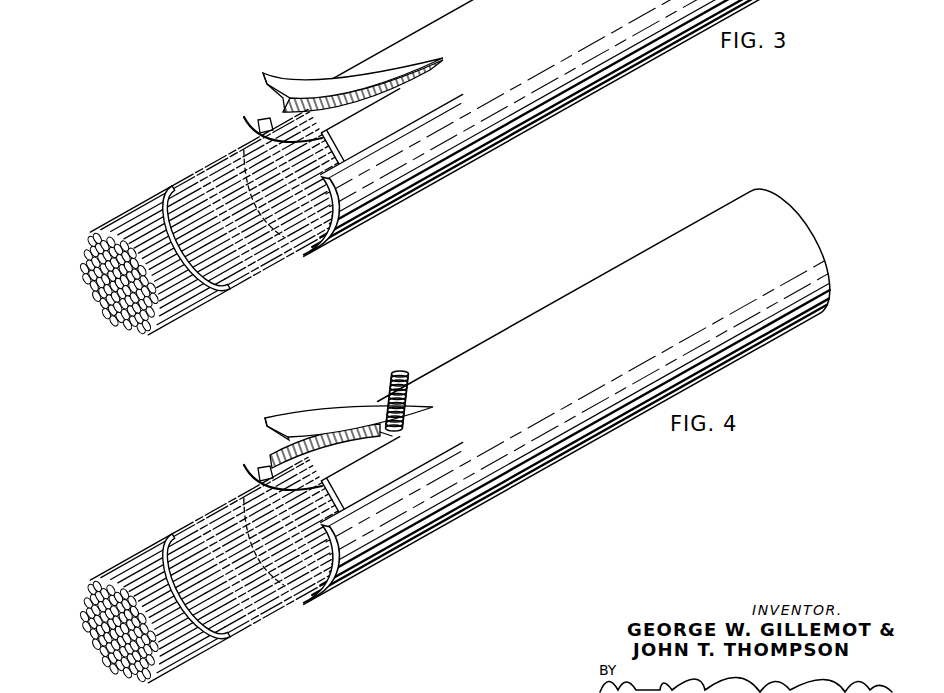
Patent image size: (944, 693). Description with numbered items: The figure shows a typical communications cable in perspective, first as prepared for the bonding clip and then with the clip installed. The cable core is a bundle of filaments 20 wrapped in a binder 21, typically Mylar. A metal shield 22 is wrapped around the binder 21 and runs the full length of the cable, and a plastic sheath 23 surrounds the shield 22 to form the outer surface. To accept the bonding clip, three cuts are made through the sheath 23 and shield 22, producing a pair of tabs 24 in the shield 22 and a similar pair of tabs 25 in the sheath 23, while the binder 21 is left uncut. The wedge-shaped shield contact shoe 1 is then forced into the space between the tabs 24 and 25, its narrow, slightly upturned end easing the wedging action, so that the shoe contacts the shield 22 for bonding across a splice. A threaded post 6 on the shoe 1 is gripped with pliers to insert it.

In FIG. 4, the shield contact shoe 1 is at (378, 438).
In FIG. 4, the threaded post 6 is at (400, 374).
In FIG. 3, the filaments 20 is at (82, 268).
In FIG. 4, the filaments 20 is at (73, 644).
In FIG. 3, the binder 21 is at (217, 163).
In FIG. 4, the binder 21 is at (256, 554).
In FIG. 3, the metal shield 22 is at (290, 110).
In FIG. 3, the plastic sheath 23 is at (413, 170).
In FIG. 4, the plastic sheath 23 is at (541, 389).
In FIG. 3, the tabs 24 is at (267, 131).
In FIG. 4, the tabs 24 is at (287, 470).
In FIG. 3, the tabs 25 is at (343, 127).
In FIG. 4, the tabs 25 is at (314, 412).